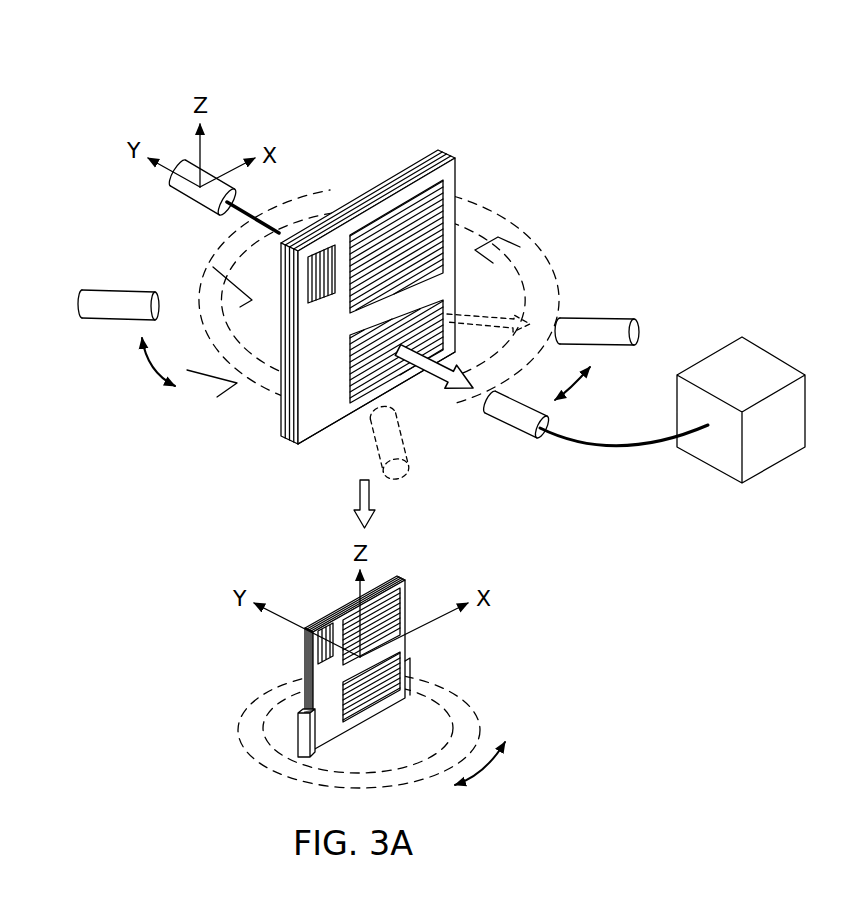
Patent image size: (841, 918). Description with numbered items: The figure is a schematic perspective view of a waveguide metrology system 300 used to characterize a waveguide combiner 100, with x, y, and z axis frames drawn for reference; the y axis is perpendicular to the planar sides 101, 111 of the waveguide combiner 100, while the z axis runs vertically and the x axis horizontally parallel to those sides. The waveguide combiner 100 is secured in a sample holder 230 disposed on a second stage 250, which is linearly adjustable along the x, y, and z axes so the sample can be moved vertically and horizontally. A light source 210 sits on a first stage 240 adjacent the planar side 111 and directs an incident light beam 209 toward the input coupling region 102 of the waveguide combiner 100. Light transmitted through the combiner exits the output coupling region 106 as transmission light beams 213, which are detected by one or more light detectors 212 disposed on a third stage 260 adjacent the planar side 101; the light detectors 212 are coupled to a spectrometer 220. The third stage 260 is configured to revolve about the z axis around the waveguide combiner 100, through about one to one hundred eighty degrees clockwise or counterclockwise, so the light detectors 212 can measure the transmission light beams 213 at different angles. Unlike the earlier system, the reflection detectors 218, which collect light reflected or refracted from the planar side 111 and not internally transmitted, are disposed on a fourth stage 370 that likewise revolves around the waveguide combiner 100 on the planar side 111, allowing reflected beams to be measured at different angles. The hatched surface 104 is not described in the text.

The waveguide combiner 100 is at (380, 316).
The planar side 101 is at (309, 440).
The input coupling region 102 is at (307, 282).
The panel surface 104 is at (456, 197).
The output coupling region 106 is at (408, 372).
The planar side 111 is at (280, 420).
The incident light beam 209 is at (278, 230).
The light source 210 is at (207, 203).
The light detector 212 is at (612, 316).
The transmission light beam 213 is at (483, 318).
The reflection detector 218 is at (118, 310).
The spectrometer 220 is at (757, 388).
The sample holder 230 is at (302, 735).
The first stage 240 is at (185, 245).
The second stage 250 is at (467, 695).
The third stage 260 is at (508, 245).
The metrology system 300 is at (326, 128).
The fourth stage 370 is at (200, 392).